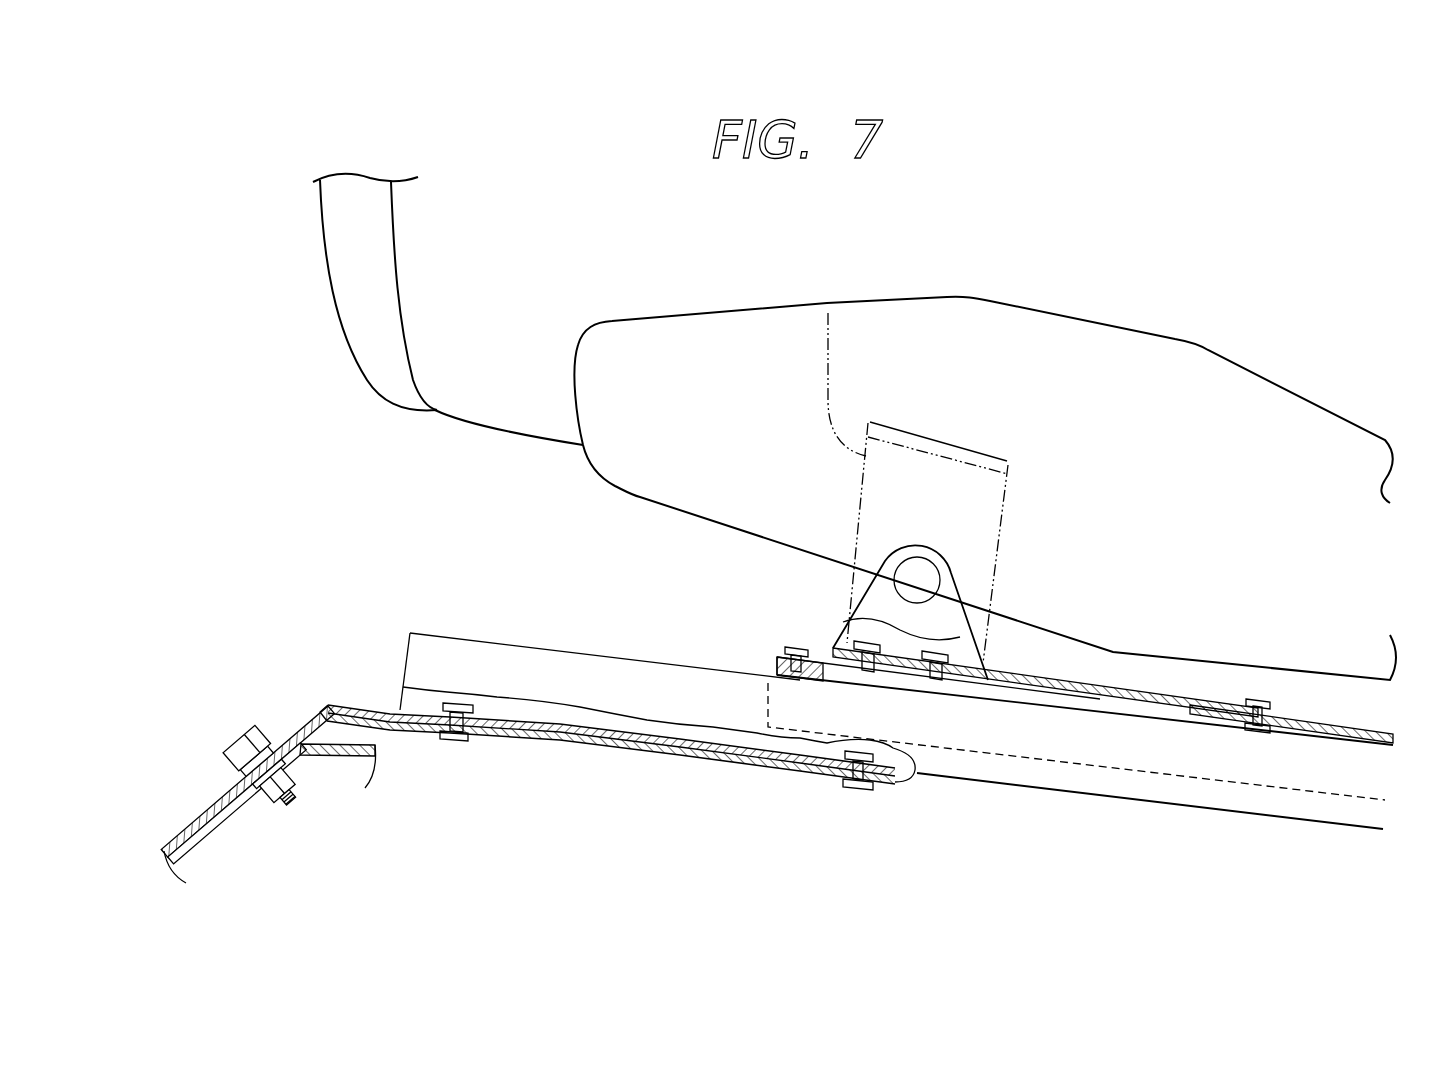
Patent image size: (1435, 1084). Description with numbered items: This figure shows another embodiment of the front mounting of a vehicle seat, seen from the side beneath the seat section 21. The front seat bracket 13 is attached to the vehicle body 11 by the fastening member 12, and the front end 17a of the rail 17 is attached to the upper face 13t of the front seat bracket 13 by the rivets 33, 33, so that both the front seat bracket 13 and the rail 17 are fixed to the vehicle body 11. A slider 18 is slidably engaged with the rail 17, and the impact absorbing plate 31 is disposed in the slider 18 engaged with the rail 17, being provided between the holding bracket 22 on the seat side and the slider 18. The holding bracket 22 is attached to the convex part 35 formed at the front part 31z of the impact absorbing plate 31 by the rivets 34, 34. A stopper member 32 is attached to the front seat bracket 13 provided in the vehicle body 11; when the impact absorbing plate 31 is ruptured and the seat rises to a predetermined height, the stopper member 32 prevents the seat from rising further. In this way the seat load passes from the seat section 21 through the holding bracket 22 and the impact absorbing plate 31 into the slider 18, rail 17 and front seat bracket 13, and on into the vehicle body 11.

The vehicle body 11 is at (212, 820).
The fastening member 12 is at (242, 748).
The front seat bracket 13 is at (496, 756).
The upper face of the front seat bracket 13t is at (350, 703).
The rail 17 is at (623, 658).
The front end of the rail 17a is at (448, 648).
The slider 18 is at (767, 692).
The seat section 21 is at (703, 343).
The holding bracket 22 is at (875, 592).
The impact absorbing plate 31 is at (956, 635).
The front part of the impact absorbing plate 31z is at (825, 630).
The stopper member 32 is at (828, 305).
The rivet 33 is at (455, 742).
The rivet 34 is at (866, 675).
The convex part 35 is at (825, 652).